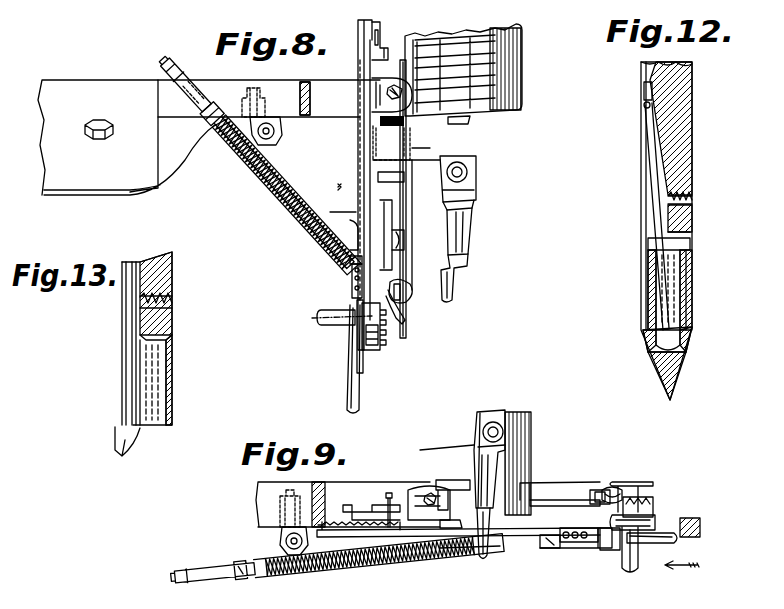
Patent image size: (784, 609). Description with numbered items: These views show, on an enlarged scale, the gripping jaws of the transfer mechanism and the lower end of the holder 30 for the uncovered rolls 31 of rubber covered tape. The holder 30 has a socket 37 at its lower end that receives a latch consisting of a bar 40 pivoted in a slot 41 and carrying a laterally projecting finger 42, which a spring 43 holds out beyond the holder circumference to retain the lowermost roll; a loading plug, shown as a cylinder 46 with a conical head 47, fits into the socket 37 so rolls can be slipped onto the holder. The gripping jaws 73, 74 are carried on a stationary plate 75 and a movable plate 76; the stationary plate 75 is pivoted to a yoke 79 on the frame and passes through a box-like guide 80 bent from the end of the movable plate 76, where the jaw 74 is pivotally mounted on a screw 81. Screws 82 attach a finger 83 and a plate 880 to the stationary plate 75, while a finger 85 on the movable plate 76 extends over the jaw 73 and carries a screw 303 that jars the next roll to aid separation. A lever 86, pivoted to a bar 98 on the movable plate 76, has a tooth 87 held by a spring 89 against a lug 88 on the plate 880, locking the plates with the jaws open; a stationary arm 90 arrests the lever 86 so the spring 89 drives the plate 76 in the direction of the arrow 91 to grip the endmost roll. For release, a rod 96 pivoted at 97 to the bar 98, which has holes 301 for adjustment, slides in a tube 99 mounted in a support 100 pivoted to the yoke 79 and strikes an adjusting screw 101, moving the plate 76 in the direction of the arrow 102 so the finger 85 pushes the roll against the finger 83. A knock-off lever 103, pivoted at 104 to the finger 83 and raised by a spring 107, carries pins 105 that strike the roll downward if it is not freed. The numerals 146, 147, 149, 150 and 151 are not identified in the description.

In FIG. 12, the holder 30 is at (684, 130).
In FIG. 13, the holder 30 is at (172, 268).
In FIG. 8, the rolls 31 is at (514, 72).
In FIG. 9, the rolls 31 is at (432, 448).
In FIG. 12, the socket 37 is at (684, 246).
In FIG. 13, the socket 37 is at (160, 369).
In FIG. 12, the bar 40 is at (650, 182).
In FIG. 13, the bar 40 is at (130, 396).
In FIG. 12, the slot 41 is at (648, 229).
In FIG. 13, the slot 41 is at (124, 345).
In FIG. 8, the finger 42 is at (452, 120).
In FIG. 12, the finger 42 is at (648, 350).
In FIG. 13, the finger 42 is at (135, 440).
In FIG. 9, the finger 42 is at (465, 566).
In FIG. 12, the spring 43 is at (680, 192).
In FIG. 13, the spring 43 is at (140, 306).
In FIG. 12, the cylinder 46 is at (687, 301).
In FIG. 12, the conical head 47 is at (678, 368).
In FIG. 8, the gripping jaw 73 is at (374, 112).
In FIG. 9, the gripping jaw 73 is at (408, 496).
In FIG. 8, the gripping jaw 74 is at (396, 214).
In FIG. 9, the gripping jaw 74 is at (535, 500).
In FIG. 8, the stationary plate 75 is at (372, 145).
In FIG. 9, the stationary plate 75 is at (592, 552).
In FIG. 8, the movable plate 76 is at (360, 158).
In FIG. 9, the movable plate 76 is at (360, 540).
In FIG. 8, the yoke 79 is at (274, 84).
In FIG. 9, the yoke 79 is at (266, 492).
In FIG. 8, the box-like guide 80 is at (350, 279).
In FIG. 8, the screw 81 is at (398, 242).
In FIG. 9, the screw 81 is at (596, 484).
In FIG. 8, the screws 82 is at (385, 335).
In FIG. 9, the screws 82 is at (652, 508).
In FIG. 8, the finger 83 is at (400, 266).
In FIG. 9, the finger 83 is at (625, 484).
In FIG. 8, the finger 85 is at (380, 50).
In FIG. 9, the finger 85 is at (364, 499).
In FIG. 8, the lever 86 is at (348, 360).
In FIG. 9, the lever 86 is at (665, 545).
In FIG. 8, the tooth 87 is at (360, 360).
In FIG. 9, the tooth 87 is at (612, 550).
In FIG. 8, the lug 88 is at (350, 330).
In FIG. 9, the lug 88 is at (630, 575).
In FIG. 8, the spring 89 is at (312, 218).
In FIG. 9, the spring 89 is at (372, 560).
In FIG. 9, the stationary arm 90 is at (700, 530).
In FIG. 9, the arrow 91 is at (680, 567).
In FIG. 8, the rod 96 is at (324, 190).
In FIG. 9, the rod 96 is at (458, 552).
In FIG. 8, the pivot 97 is at (348, 262).
In FIG. 9, the pivot 97 is at (548, 546).
In FIG. 8, the bar 98 is at (350, 228).
In FIG. 9, the bar 98 is at (572, 542).
In FIG. 8, the tube 99 is at (282, 195).
In FIG. 9, the tube 99 is at (340, 570).
In FIG. 8, the support 100 is at (252, 145).
In FIG. 9, the support 100 is at (298, 568).
In FIG. 8, the adjusting screw 101 is at (170, 66).
In FIG. 9, the adjusting screw 101 is at (176, 572).
In FIG. 8, the arrow 102 is at (340, 186).
In FIG. 8, the knock-off lever 103 is at (412, 150).
In FIG. 9, the knock-off lever 103 is at (546, 478).
In FIG. 8, the pivot 104 is at (412, 296).
In FIG. 9, the pivot 104 is at (603, 486).
In FIG. 8, the pins 105 is at (404, 120).
In FIG. 9, the pins 105 is at (470, 495).
In FIG. 8, the spring 107 is at (396, 316).
In FIG. 9, the spring 107 is at (600, 494).
In FIG. 8, the plunger pin 146 is at (455, 280).
In FIG. 9, the plunger pin 146 is at (481, 566).
In FIG. 8, the plunger head 147 is at (460, 158).
In FIG. 9, the plunger head 147 is at (512, 470).
In FIG. 8, the plunger shoulder 149 is at (471, 200).
In FIG. 9, the plunger shoulder 149 is at (496, 412).
In FIG. 8, the pivot screw 150 is at (478, 172).
In FIG. 9, the pivot screw 150 is at (500, 422).
In FIG. 8, the plunger body 151 is at (469, 230).
In FIG. 9, the plunger body 151 is at (484, 500).
In FIG. 8, the holes 301 is at (355, 290).
In FIG. 9, the screw 303 is at (388, 492).
In FIG. 8, the plate 880 is at (384, 345).
In FIG. 9, the plate 880 is at (650, 522).